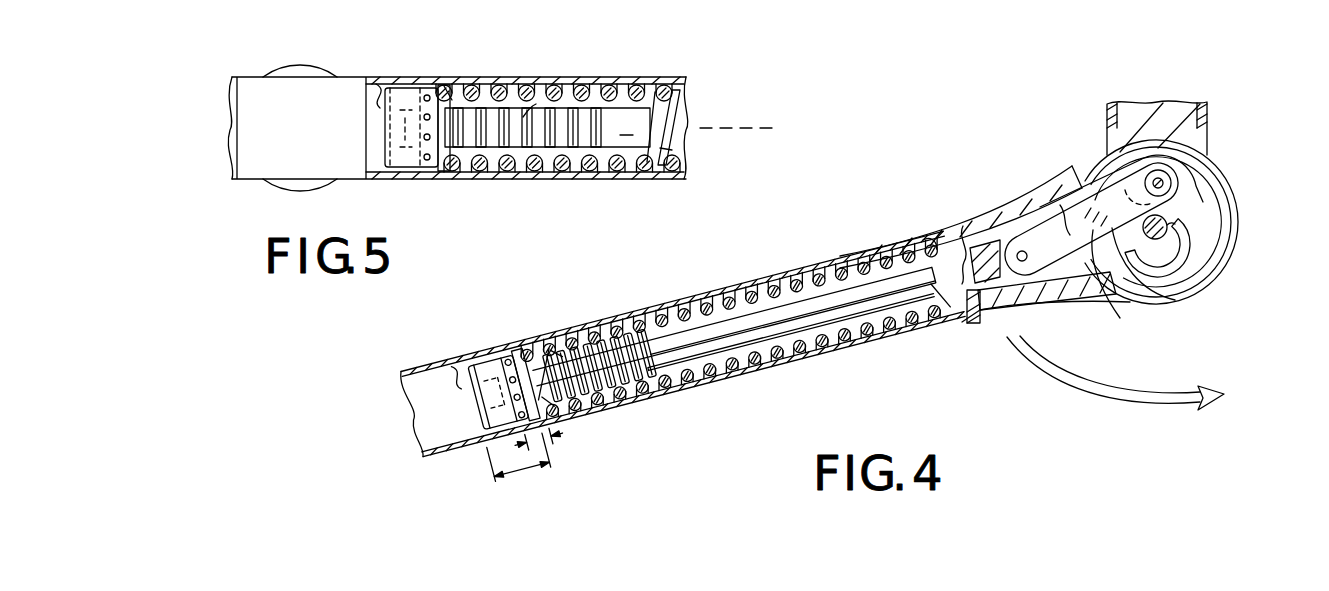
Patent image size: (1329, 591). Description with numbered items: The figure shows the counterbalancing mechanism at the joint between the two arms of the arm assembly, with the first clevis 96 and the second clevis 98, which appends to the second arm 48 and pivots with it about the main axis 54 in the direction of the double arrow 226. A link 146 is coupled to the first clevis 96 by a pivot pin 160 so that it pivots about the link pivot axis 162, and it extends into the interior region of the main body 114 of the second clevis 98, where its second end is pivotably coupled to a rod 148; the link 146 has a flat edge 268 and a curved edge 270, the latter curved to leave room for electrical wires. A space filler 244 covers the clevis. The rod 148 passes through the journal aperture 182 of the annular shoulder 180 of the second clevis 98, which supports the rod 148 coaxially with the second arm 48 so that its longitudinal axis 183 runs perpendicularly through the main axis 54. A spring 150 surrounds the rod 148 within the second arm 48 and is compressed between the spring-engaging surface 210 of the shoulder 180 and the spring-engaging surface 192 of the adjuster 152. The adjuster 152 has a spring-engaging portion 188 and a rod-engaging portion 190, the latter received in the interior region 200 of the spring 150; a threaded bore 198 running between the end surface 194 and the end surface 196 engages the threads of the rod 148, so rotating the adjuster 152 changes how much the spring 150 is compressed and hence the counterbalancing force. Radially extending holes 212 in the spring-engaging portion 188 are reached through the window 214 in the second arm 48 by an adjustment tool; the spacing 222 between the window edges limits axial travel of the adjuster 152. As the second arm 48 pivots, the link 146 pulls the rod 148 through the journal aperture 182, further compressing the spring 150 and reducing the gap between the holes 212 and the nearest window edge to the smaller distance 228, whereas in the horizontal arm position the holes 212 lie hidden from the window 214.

In FIG. 5, the second arm 48 is at (597, 79).
In FIG. 4, the second arm 48 is at (794, 266).
In FIG. 4, the main axis 54 is at (1168, 225).
In FIG. 4, the first clevis 96 is at (1148, 112).
In FIG. 4, the second clevis 98 is at (1060, 325).
In FIG. 4, the main body 114 is at (1024, 210).
In FIG. 4, the link 146 is at (1065, 235).
In FIG. 5, the rod 148 is at (645, 118).
In FIG. 4, the rod 148 is at (742, 328).
In FIG. 5, the spring 150 is at (675, 98).
In FIG. 4, the spring 150 is at (795, 353).
In FIG. 5, the adjuster 152 is at (398, 125).
In FIG. 4, the adjuster 152 is at (470, 400).
In FIG. 4, the pivot pin 160 is at (1167, 183).
In FIG. 4, the link pivot axis 162 is at (1167, 215).
In FIG. 4, the annular shoulder 180 is at (972, 324).
In FIG. 4, the journal aperture 182 is at (969, 246).
In FIG. 5, the longitudinal axis 183 is at (768, 125).
In FIG. 5, the spring-engaging portion 188 is at (440, 86).
In FIG. 4, the spring-engaging portion 188 is at (525, 353).
In FIG. 5, the rod-engaging portion 190 is at (520, 108).
In FIG. 4, the rod-engaging portion 190 is at (591, 334).
In FIG. 5, the spring-engaging surface 192 is at (448, 97).
In FIG. 4, the spring-engaging surface 192 is at (557, 397).
In FIG. 5, the end surface 194 is at (382, 96).
In FIG. 4, the end surface 194 is at (456, 372).
In FIG. 5, the end surface 196 is at (543, 153).
In FIG. 4, the end surface 196 is at (631, 327).
In FIG. 5, the threaded bore 198 is at (523, 117).
In FIG. 4, the threaded bore 198 is at (628, 375).
In FIG. 5, the interior region 200 is at (672, 150).
In FIG. 4, the interior region 200 is at (842, 345).
In FIG. 4, the spring-engaging surface 210 is at (945, 332).
In FIG. 5, the holes 212 is at (424, 140).
In FIG. 4, the holes 212 is at (509, 380).
In FIG. 5, the window 214 is at (488, 178).
In FIG. 4, the window 214 is at (490, 440).
In FIG. 4, the distance 222 is at (522, 478).
In FIG. 4, the double arrow 226 is at (1080, 392).
In FIG. 4, the distance 228 is at (552, 449).
In FIG. 4, the space filler 244 is at (1185, 270).
In FIG. 4, the flat edge 268 is at (1122, 300).
In FIG. 4, the curved edge 270 is at (1108, 195).